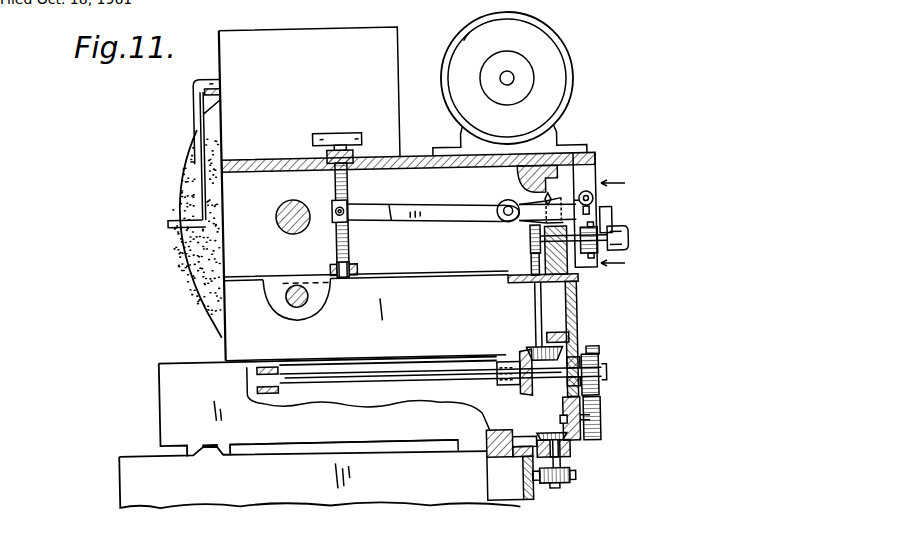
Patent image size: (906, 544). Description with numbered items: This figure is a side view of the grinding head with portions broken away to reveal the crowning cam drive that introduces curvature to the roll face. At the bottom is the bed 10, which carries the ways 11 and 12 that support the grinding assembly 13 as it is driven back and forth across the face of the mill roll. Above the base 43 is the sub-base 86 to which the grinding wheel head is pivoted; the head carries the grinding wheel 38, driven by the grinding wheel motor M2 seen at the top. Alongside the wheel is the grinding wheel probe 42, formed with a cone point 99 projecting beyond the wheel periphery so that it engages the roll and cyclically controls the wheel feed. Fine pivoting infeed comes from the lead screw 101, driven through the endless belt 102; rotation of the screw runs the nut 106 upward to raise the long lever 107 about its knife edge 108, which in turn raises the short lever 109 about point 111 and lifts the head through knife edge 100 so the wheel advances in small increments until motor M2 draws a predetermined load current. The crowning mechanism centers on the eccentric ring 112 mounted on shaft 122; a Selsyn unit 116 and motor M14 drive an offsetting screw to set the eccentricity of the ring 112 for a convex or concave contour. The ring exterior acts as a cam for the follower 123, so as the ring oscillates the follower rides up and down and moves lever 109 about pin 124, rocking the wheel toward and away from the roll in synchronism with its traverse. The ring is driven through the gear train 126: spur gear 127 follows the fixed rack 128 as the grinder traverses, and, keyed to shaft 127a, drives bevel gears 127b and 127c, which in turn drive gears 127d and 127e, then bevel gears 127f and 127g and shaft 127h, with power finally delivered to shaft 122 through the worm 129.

The bed 10 is at (132, 483).
The way 11 is at (492, 447).
The way 12 is at (214, 456).
The grinding assembly 13 is at (656, 268).
The grinding wheel 38 is at (195, 272).
The grinding wheel probe 42 is at (200, 118).
The base 43 is at (172, 404).
The sub-base 86 is at (382, 342).
The cone point 99 is at (163, 230).
The knife edge 100 is at (515, 166).
The lead screw 101 is at (335, 246).
The endless belt 102 is at (313, 138).
The nut 106 is at (336, 204).
The long lever 107 is at (461, 225).
The knife edge 108 is at (578, 168).
The lever 109 is at (517, 203).
The pivot point 111 is at (596, 200).
The eccentric ring 112 is at (578, 270).
The Selsyn unit 116 is at (613, 217).
The shaft 122 is at (529, 238).
The follower 123 is at (612, 220).
The pin 124 is at (462, 219).
The gear train 126 is at (609, 390).
The spur gear 127 is at (577, 476).
The shaft 127a is at (561, 464).
The bevel gear 127b is at (537, 432).
The bevel gear 127c is at (561, 407).
The gear 127d is at (600, 416).
The gear 127e is at (600, 352).
The bevel gear 127f is at (510, 360).
The bevel gear 127g is at (523, 343).
The shaft 127h is at (548, 300).
The fixed rack 128 is at (510, 500).
The worm 129 is at (528, 258).
The grinding wheel motor M2 is at (555, 57).
The motor M14 is at (630, 239).